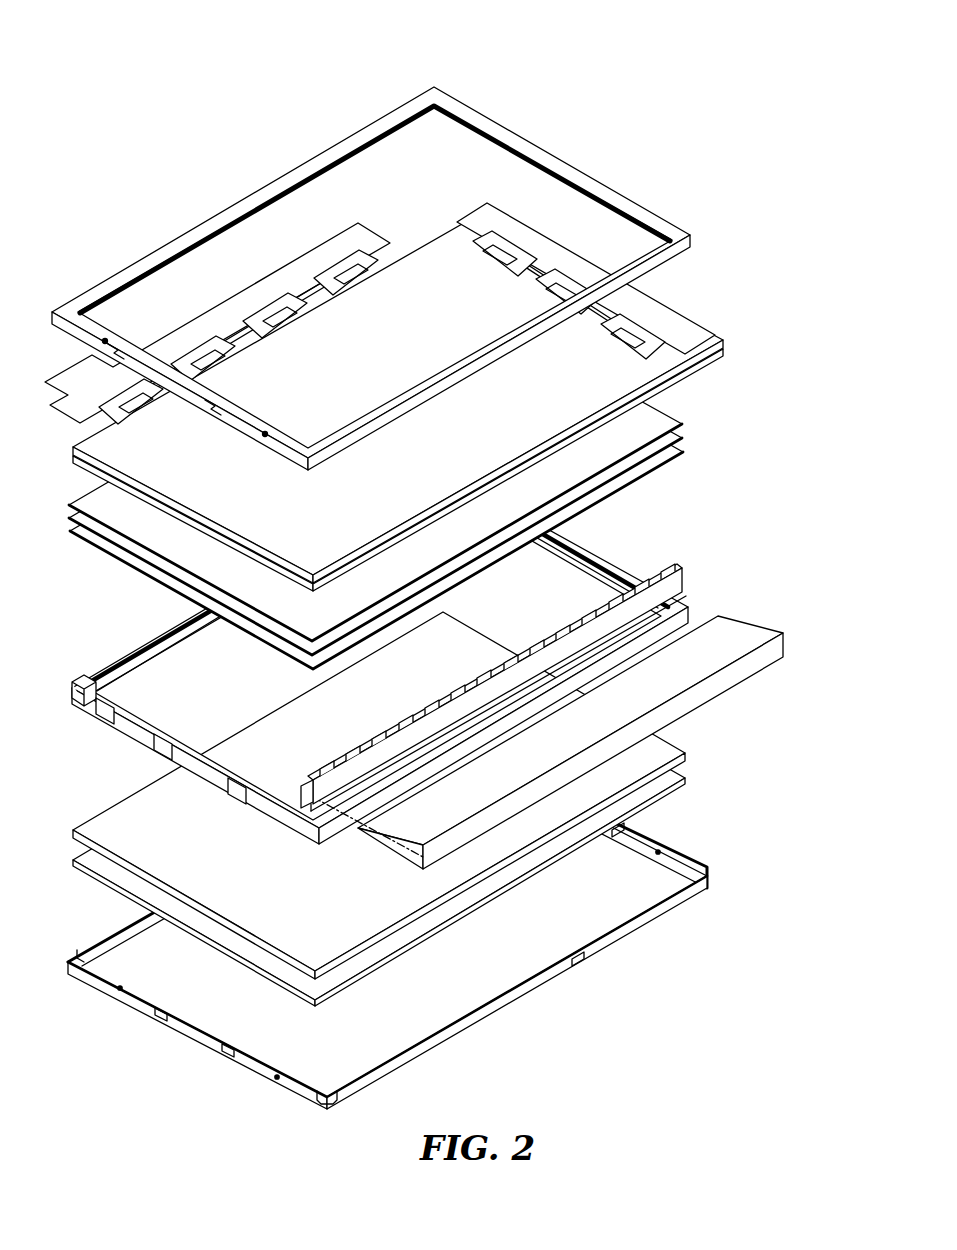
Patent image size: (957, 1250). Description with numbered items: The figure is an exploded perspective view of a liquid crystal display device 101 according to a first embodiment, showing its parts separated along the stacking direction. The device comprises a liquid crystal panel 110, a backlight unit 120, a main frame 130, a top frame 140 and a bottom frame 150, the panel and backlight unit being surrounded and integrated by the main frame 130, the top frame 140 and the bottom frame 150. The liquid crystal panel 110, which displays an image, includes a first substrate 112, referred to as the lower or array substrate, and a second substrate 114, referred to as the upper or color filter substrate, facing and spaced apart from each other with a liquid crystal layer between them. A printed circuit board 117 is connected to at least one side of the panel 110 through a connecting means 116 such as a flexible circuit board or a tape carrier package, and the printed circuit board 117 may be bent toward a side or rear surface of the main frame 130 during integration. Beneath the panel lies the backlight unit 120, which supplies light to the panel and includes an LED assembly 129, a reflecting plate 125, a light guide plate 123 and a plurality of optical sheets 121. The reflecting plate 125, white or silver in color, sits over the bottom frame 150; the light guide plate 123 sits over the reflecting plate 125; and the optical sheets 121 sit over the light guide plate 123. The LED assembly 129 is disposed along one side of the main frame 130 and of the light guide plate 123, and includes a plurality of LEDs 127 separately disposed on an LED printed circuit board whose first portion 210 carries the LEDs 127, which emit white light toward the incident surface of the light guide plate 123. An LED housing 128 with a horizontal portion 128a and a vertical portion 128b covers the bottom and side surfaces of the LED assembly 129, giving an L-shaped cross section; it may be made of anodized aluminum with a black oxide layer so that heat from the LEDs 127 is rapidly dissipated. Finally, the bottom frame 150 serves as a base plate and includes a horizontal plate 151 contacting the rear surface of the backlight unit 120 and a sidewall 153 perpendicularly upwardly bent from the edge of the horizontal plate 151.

The liquid crystal display device 101 is at (378, 37).
The liquid crystal panel 110 is at (430, 386).
The first substrate 112 is at (723, 340).
The second substrate 114 is at (640, 370).
The connecting means 116 is at (470, 250).
The printed circuit board 117 is at (315, 262).
The backlight unit 120 is at (478, 647).
The optical sheets 121 is at (405, 479).
The light guide plate 123 is at (685, 753).
The reflecting plate 125 is at (685, 778).
The LEDs 127 is at (640, 580).
The LED housing 128 is at (576, 717).
The horizontal portion 128a is at (740, 648).
The vertical portion 128b is at (785, 655).
The LED assembly 129 is at (521, 653).
The main frame 130 is at (125, 700).
The top frame 140 is at (681, 232).
The bottom frame 150 is at (437, 926).
The horizontal plate 151 is at (616, 903).
The sidewall 153 is at (627, 930).
The first portion 210 is at (643, 527).